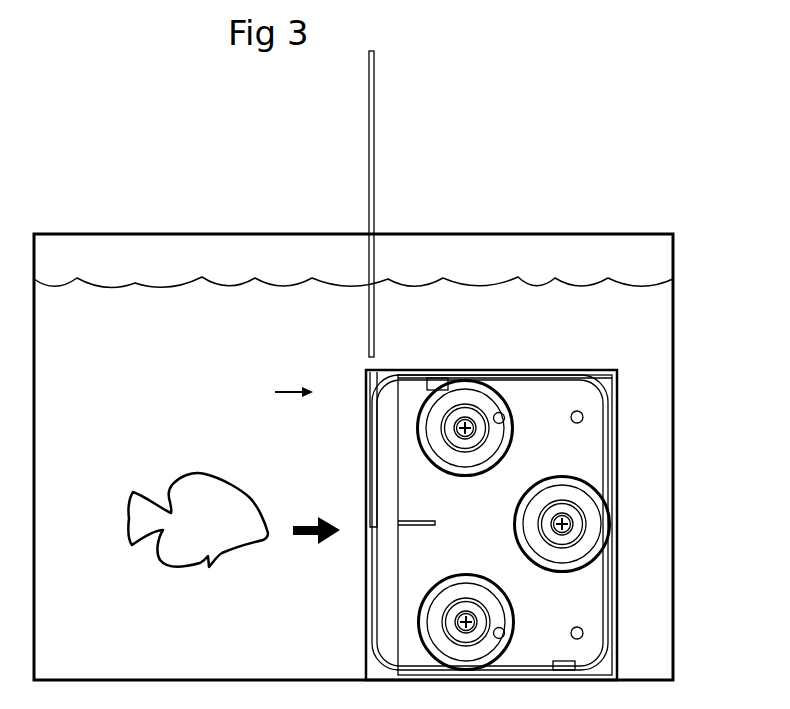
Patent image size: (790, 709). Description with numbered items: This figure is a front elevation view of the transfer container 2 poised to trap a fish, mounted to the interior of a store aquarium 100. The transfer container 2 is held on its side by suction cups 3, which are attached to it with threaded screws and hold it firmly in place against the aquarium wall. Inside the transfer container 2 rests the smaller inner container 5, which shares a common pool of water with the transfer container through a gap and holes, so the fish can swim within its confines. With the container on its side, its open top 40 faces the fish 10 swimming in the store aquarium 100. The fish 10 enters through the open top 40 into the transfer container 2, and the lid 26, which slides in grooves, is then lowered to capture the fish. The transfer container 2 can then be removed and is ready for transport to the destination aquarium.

The store aquarium 100 is at (658, 352).
The lid 26 is at (371, 157).
The transfer container 2 is at (573, 368).
The suction cups 3 is at (485, 387).
The inner container 5 is at (398, 463).
The open top 40 is at (281, 391).
The fish 10 is at (217, 526).